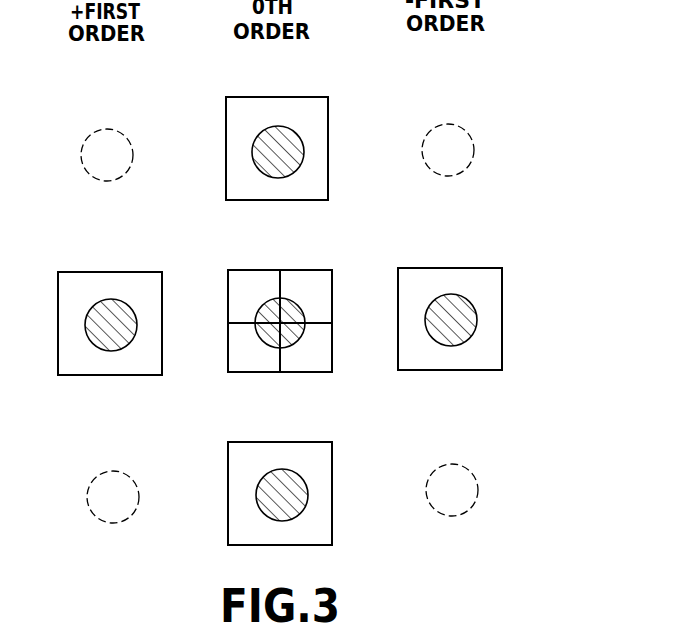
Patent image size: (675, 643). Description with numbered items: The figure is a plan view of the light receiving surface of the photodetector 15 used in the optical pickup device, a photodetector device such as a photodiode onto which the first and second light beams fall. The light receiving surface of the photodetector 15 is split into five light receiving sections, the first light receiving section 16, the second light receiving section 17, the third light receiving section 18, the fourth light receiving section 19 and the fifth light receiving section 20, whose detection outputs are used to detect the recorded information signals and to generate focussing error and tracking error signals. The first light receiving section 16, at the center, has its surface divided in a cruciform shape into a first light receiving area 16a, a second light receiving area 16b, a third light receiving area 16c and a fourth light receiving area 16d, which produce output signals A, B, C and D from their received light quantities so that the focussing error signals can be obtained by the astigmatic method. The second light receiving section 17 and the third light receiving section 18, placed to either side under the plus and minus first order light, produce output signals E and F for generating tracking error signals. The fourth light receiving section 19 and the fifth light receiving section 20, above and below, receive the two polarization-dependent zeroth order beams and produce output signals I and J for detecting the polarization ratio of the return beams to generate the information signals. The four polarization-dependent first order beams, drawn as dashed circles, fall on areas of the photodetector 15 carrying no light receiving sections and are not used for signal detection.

The photodetector 15 is at (470, 67).
The first light receiving section 16 is at (295, 318).
The first light receiving area 16a is at (253, 271).
The second light receiving area 16b is at (253, 374).
The third light receiving area 16c is at (307, 372).
The fourth light receiving area 16d is at (325, 282).
The second light receiving section 17 is at (120, 272).
The third light receiving section 18 is at (470, 268).
The fourth light receiving section 19 is at (317, 93).
The fifth light receiving section 20 is at (398, 506).